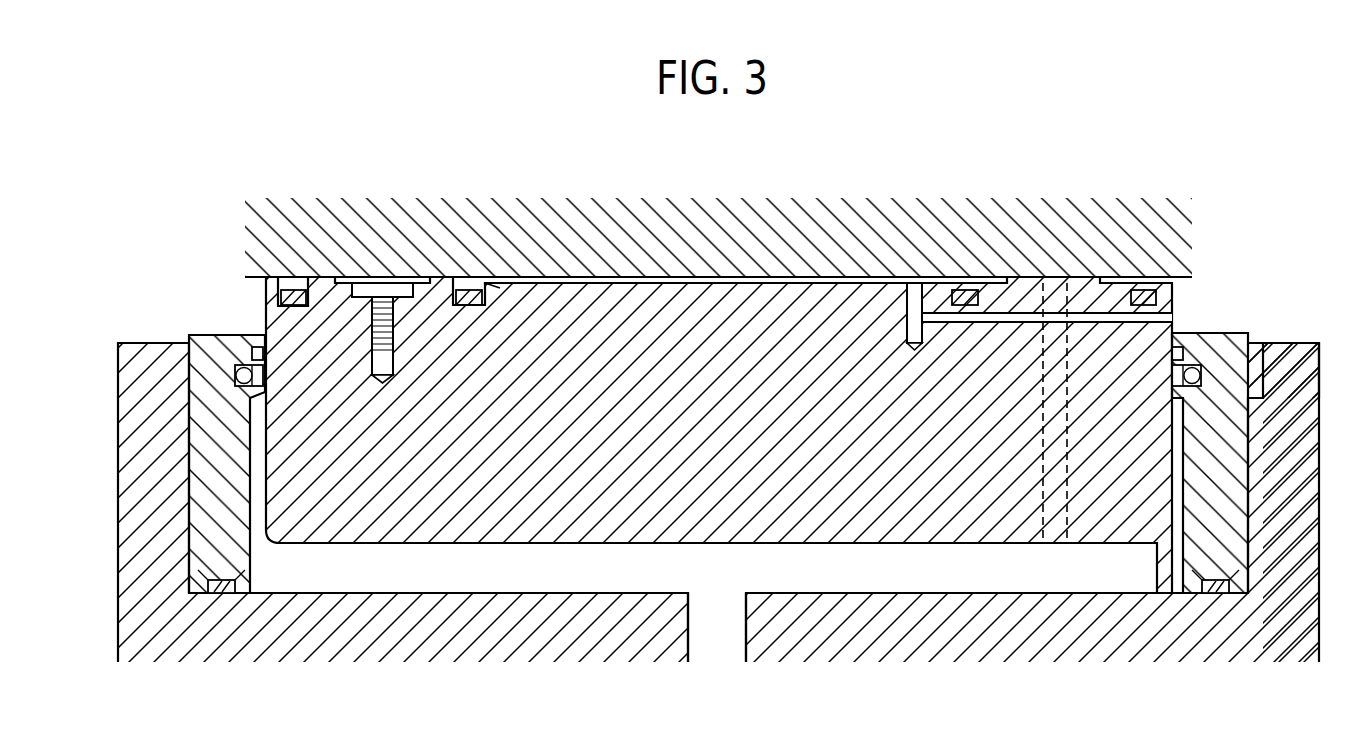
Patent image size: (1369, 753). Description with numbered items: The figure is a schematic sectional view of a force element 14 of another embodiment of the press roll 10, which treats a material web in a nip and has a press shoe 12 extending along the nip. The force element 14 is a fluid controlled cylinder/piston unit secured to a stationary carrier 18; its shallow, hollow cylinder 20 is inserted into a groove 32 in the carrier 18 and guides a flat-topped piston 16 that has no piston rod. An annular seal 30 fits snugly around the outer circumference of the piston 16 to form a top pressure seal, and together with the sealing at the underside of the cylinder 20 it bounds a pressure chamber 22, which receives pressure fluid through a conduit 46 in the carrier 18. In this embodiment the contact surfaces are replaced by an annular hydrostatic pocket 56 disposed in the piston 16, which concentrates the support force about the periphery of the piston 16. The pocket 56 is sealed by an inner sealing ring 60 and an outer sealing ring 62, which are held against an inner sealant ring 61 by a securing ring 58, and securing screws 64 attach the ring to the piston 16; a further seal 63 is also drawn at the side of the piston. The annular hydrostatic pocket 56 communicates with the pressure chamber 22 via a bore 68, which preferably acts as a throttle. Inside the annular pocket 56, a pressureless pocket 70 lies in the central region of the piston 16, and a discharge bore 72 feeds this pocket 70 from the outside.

The press roll 10 is at (849, 166).
The press shoe 12 is at (594, 215).
The force element 14 is at (237, 316).
The piston 16 is at (1160, 344).
The stationary carrier 18 is at (860, 636).
The cylinder 20 is at (198, 455).
The pressure chamber 22 is at (318, 577).
The annular seal 30 is at (262, 376).
The groove 32 is at (1250, 326).
The conduit 46 is at (723, 655).
The annular hydrostatic pocket 56 is at (363, 279).
The securing ring 58 is at (325, 279).
The inner sealing ring 60 is at (465, 284).
The inner sealant ring 61 is at (481, 289).
The outer sealing ring 62 is at (293, 284).
The seal 63 is at (263, 297).
The securing screw 64 is at (399, 290).
The bore 68 is at (1057, 543).
The pressureless pocket 70 is at (710, 283).
The discharge bore 72 is at (907, 318).